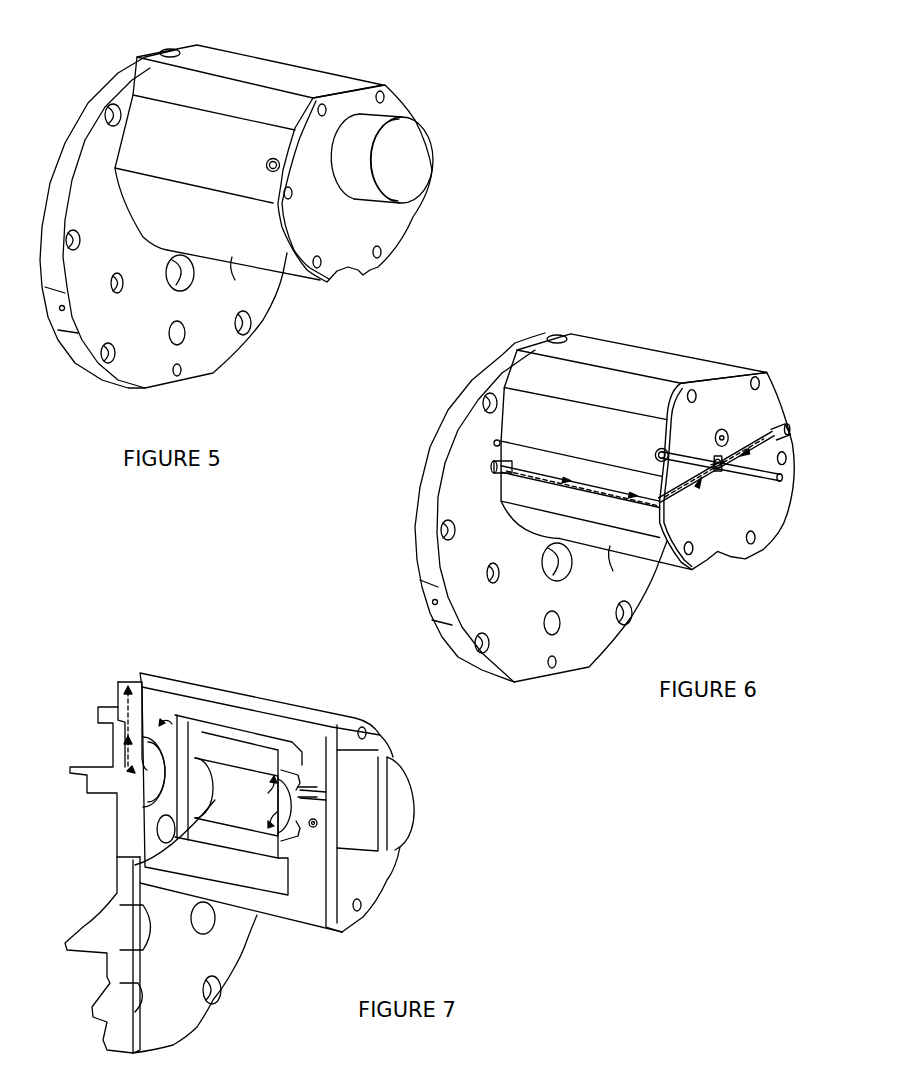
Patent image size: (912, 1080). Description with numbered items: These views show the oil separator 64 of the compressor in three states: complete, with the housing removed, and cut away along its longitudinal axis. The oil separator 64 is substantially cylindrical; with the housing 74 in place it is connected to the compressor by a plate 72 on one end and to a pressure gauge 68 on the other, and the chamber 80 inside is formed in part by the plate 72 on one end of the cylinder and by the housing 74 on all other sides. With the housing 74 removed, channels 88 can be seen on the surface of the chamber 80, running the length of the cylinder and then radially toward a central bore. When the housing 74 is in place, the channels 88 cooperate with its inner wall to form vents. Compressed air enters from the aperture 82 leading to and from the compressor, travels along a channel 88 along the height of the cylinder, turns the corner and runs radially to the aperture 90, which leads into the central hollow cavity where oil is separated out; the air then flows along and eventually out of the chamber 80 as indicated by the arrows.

In FIG. 5, the oil separator 64 is at (409, 54).
In FIG. 6, the oil separator 64 is at (702, 260).
In FIG. 7, the oil separator 64 is at (230, 655).
In FIG. 5, the pressure gauge 68 is at (435, 131).
In FIG. 7, the pressure gauge 68 is at (417, 767).
In FIG. 5, the plate 72 is at (251, 338).
In FIG. 7, the plate 72 is at (234, 975).
In FIG. 5, the housing 74 is at (280, 62).
In FIG. 6, the chamber 80 is at (612, 337).
In FIG. 7, the chamber 80 is at (298, 702).
In FIG. 6, the aperture 82 is at (493, 468).
In FIG. 6, the channels 88 is at (570, 465).
In FIG. 6, the aperture 90 is at (701, 452).
In FIG. 7, the aperture 90 is at (318, 822).